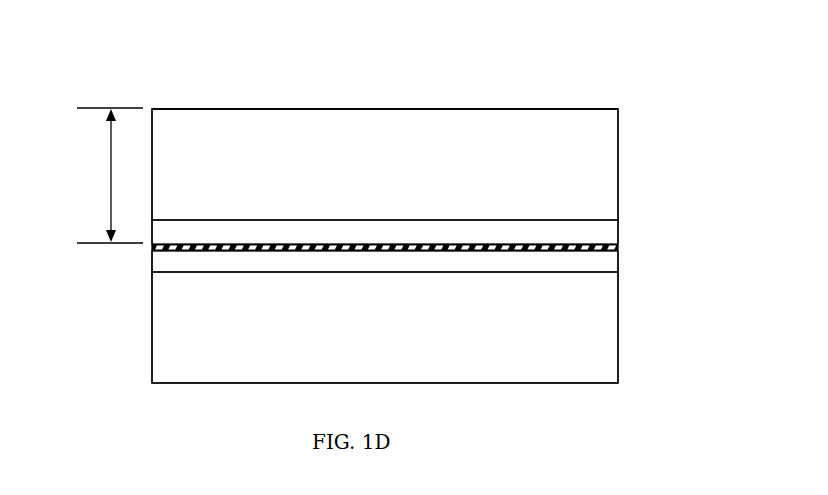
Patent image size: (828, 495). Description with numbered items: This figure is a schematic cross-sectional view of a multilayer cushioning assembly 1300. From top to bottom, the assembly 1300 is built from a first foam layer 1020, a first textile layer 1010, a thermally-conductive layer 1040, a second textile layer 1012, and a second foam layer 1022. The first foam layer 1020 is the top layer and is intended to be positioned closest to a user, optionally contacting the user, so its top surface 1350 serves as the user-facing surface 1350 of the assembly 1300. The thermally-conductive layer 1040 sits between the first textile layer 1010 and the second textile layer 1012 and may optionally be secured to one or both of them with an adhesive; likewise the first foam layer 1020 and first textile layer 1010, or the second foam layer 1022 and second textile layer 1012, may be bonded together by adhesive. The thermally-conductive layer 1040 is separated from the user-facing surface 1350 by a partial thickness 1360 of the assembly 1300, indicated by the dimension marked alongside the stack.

The multilayer cushioning assembly 1300 is at (445, 95).
The top surface 1350 is at (530, 109).
The first foam layer 1020 is at (605, 167).
The first textile layer 1010 is at (608, 232).
The thermally-conductive layer 1040 is at (617, 248).
The second textile layer 1012 is at (608, 267).
The second foam layer 1022 is at (605, 347).
The partial thickness 1360 is at (103, 175).